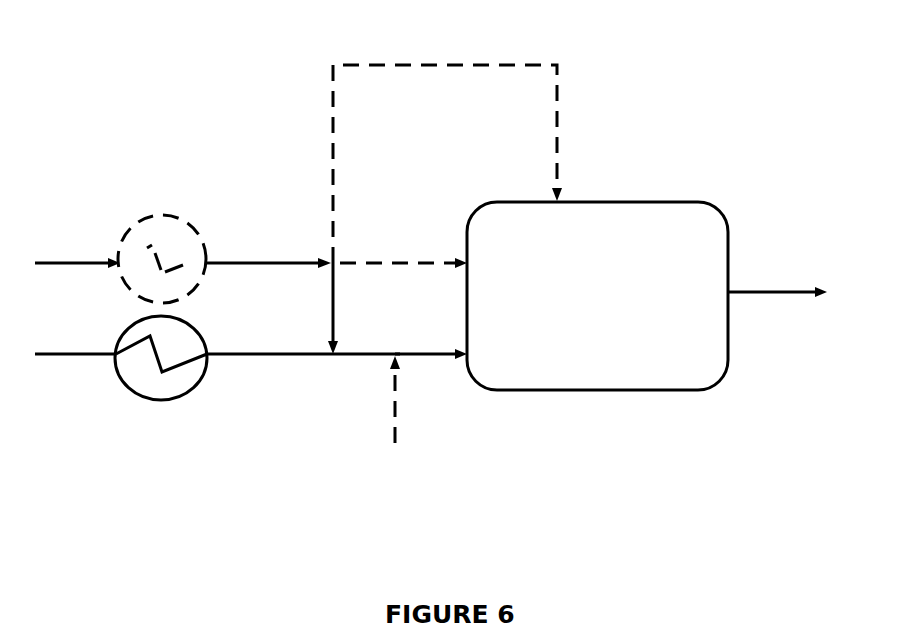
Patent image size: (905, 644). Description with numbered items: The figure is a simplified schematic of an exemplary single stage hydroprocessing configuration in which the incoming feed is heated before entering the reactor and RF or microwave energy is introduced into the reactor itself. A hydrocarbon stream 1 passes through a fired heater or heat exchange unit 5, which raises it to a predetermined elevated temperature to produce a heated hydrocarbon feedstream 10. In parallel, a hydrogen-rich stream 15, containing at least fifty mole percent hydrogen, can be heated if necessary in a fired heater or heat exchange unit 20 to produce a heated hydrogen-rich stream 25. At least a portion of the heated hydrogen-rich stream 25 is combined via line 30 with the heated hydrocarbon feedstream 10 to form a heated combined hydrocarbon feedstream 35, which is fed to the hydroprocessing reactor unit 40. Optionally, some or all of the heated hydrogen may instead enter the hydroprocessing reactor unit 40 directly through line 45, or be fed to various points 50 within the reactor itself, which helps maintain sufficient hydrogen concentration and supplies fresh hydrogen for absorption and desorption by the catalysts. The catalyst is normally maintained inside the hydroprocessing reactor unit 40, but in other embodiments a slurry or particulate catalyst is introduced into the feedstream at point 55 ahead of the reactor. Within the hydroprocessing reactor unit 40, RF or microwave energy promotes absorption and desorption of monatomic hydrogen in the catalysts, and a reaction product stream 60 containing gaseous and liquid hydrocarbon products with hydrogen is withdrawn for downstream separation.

The hydrocarbon stream 1 is at (75, 373).
The fired heater or heat exchange unit 5 is at (161, 380).
The heated hydrocarbon feedstream 10 is at (303, 373).
The hydrogen-rich stream 15 is at (77, 244).
The fired heater or heat exchange unit 20 is at (162, 238).
The heated hydrogen-rich stream 25 is at (268, 244).
The combining line 30 is at (347, 308).
The heated combined hydrocarbon feedstream 35 is at (431, 343).
The hydroprocessing reactor unit 40 is at (597, 296).
The line 45 is at (403, 248).
The various points 50 is at (449, 137).
The catalyst entry point 55 is at (409, 399).
The reaction product stream 60 is at (777, 276).